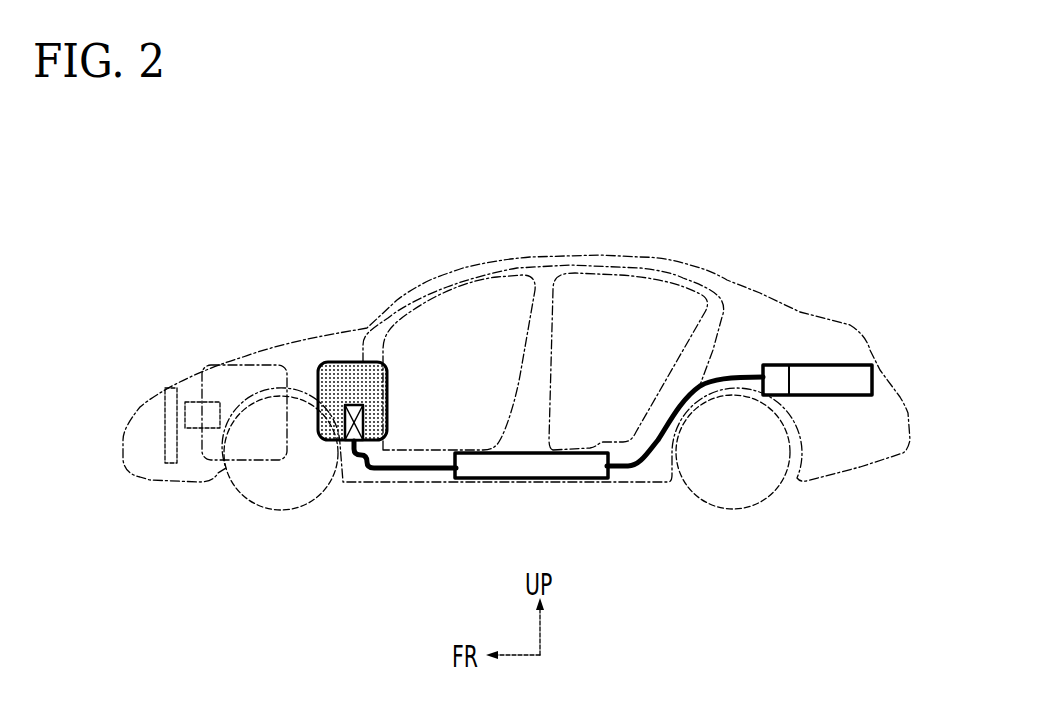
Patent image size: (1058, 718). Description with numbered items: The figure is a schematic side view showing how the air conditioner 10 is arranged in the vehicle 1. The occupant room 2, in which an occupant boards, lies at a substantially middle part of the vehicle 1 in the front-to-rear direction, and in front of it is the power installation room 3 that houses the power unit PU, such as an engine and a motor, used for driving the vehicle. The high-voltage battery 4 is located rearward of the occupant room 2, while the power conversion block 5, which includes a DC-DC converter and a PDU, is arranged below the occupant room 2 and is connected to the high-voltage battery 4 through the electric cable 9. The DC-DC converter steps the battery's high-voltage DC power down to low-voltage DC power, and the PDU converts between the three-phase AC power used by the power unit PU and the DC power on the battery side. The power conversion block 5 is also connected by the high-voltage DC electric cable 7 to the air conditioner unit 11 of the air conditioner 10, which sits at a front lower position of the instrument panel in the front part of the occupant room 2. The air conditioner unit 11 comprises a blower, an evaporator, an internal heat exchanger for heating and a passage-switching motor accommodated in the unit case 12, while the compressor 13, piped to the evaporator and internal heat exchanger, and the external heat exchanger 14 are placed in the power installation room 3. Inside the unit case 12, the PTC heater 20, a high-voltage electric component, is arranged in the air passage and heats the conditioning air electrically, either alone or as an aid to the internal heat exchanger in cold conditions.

The vehicle 1 is at (613, 222).
The occupant room 2 is at (485, 310).
The power installation room 3 is at (242, 342).
The high-voltage battery 4 is at (830, 364).
The power conversion block 5 is at (589, 480).
The high-voltage DC electric cable 7 is at (415, 472).
The electric cable 9 is at (736, 377).
The air conditioner 10 is at (403, 322).
The air conditioner unit 11 is at (348, 348).
The unit case 12 is at (318, 377).
The compressor 13 is at (197, 402).
The external heat exchanger 14 is at (167, 427).
The PTC heater 20 is at (345, 418).
The power unit PU is at (240, 354).